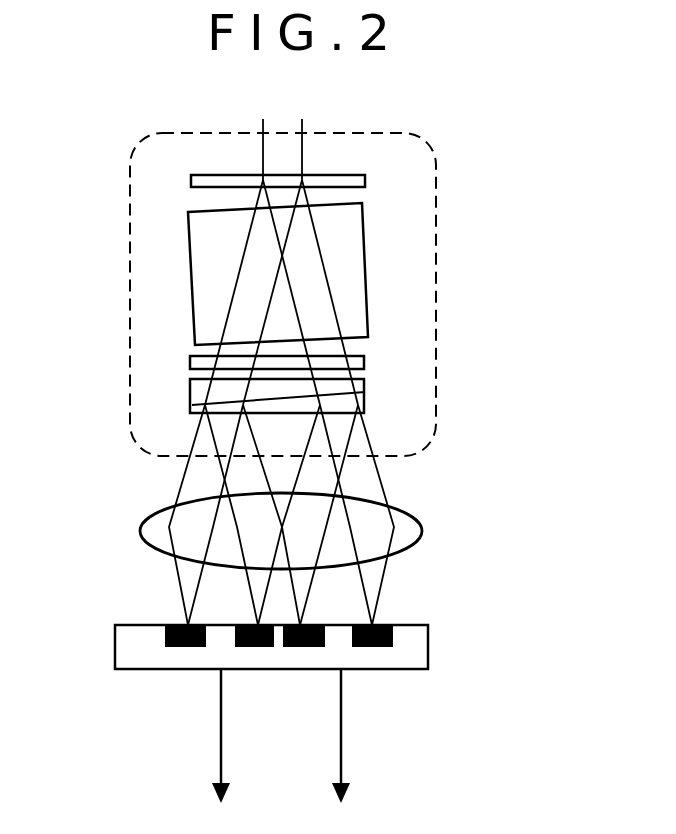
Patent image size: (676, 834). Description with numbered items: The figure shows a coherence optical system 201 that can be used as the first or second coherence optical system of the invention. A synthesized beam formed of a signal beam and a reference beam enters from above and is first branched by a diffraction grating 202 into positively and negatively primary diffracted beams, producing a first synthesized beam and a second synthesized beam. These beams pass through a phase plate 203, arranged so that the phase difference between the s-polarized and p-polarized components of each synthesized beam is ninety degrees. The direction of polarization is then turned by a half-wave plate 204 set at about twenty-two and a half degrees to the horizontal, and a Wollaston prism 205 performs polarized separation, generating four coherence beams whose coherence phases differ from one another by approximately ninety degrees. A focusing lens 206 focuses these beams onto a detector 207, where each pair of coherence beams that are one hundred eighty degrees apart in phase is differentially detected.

The coherence optical system 201 is at (437, 249).
The diffraction grating 202 is at (191, 181).
The phase plate 203 is at (188, 253).
The λ/2 plate 204 is at (191, 362).
The Wollaston prism 205 is at (190, 392).
The focusing lens 206 is at (412, 517).
The detector 207 is at (428, 635).